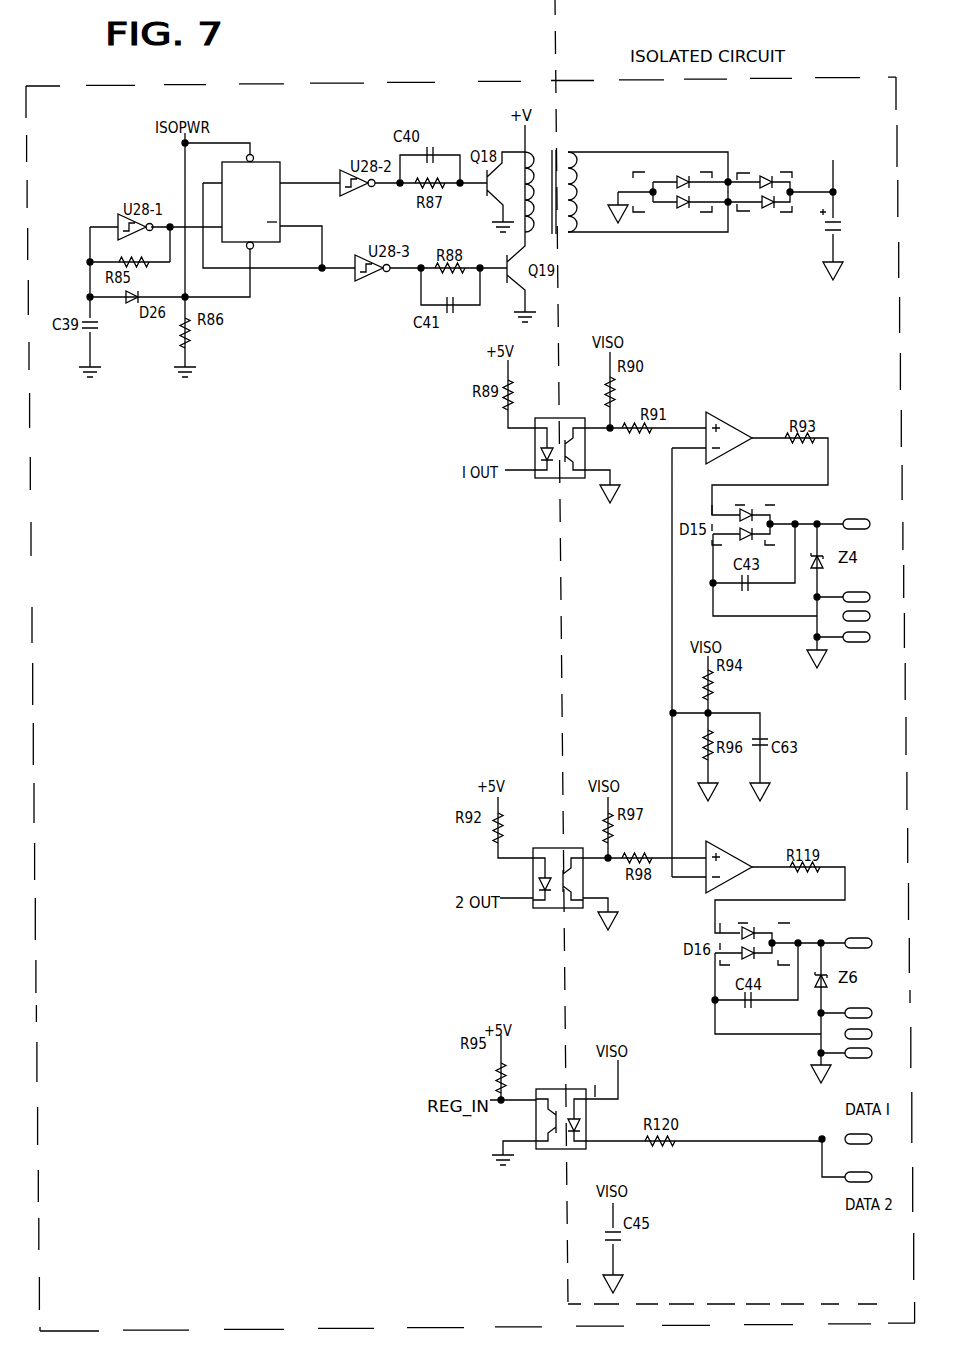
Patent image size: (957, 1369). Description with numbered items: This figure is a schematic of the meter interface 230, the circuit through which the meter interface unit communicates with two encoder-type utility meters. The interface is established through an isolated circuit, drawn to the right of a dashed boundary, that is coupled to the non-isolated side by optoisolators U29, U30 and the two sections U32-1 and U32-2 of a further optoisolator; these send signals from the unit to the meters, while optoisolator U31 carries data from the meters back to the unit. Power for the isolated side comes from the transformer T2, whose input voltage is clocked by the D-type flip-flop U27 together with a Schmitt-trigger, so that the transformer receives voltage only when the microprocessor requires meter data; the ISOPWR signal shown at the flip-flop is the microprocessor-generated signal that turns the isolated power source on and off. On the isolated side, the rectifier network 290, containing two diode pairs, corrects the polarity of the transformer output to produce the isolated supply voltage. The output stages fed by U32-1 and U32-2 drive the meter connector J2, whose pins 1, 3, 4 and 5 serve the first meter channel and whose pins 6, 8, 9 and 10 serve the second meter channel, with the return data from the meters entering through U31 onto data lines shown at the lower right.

The meter interface 230 is at (434, 84).
The rectifier network 290 is at (751, 222).
The connector J2 pin 1 is at (850, 516).
The connector J2 pin 3 is at (851, 592).
The connector J2 pin 4 is at (851, 611).
The connector J2 pin 5 is at (851, 632).
The connector pin 6 is at (852, 932).
The connector pin 8 is at (852, 1008).
The connector pin 9 is at (852, 1028).
The connector pin 10 is at (850, 1048).
The D-type flip-flop U27 is at (254, 195).
The transformer T2 is at (556, 178).
The output connector J2 is at (850, 567).
The optoisolator U29 is at (555, 438).
The optoisolator U30 is at (555, 866).
The optoisolator U31 is at (559, 1109).
The optoisolator section U32-1 is at (738, 428).
The optoisolator section U32-2 is at (735, 857).